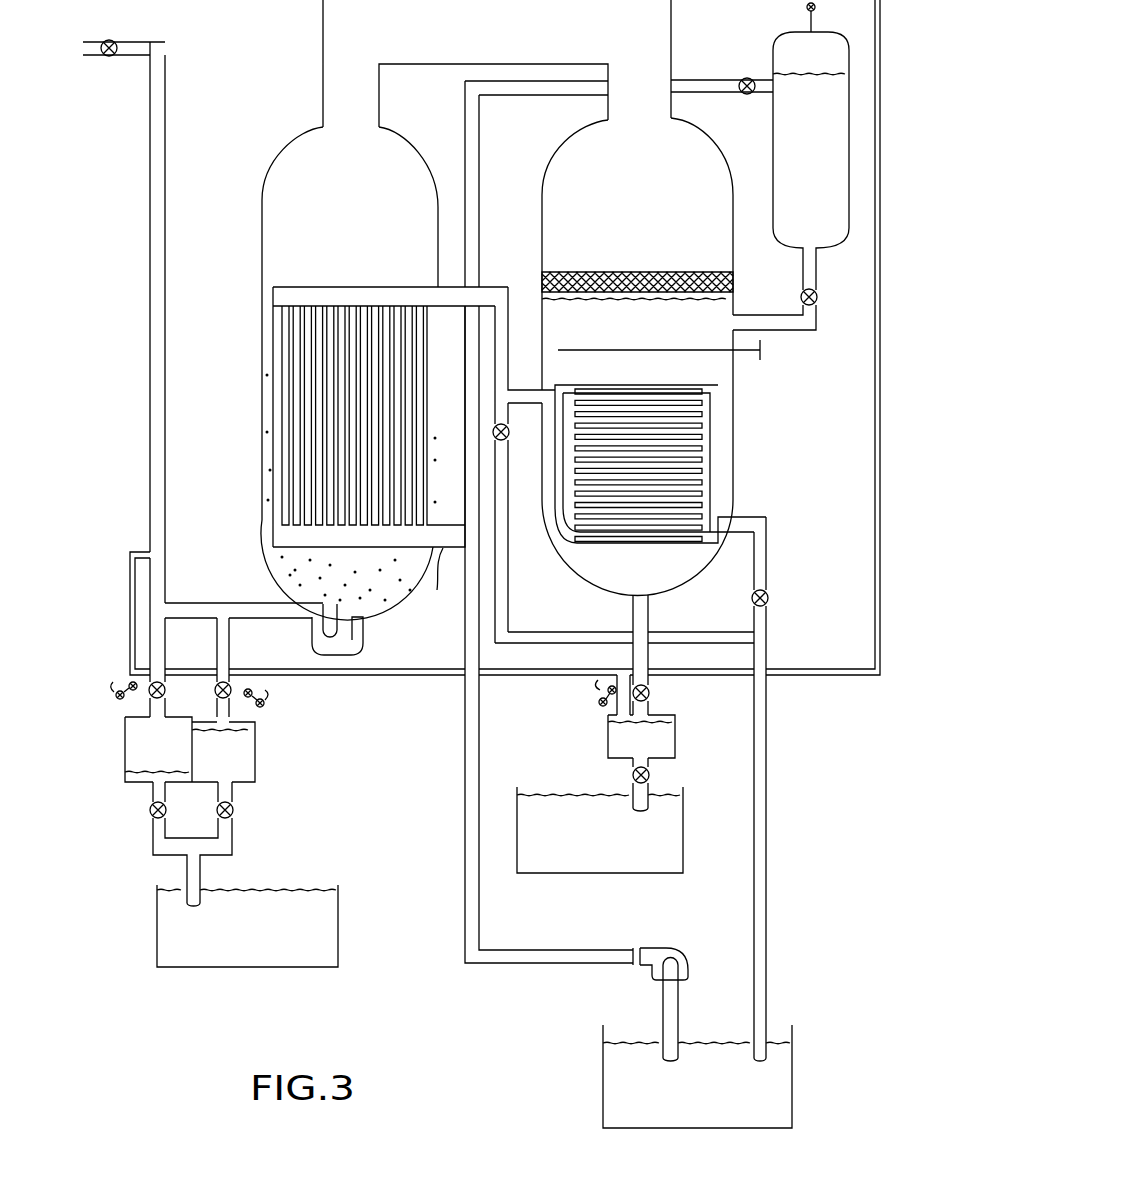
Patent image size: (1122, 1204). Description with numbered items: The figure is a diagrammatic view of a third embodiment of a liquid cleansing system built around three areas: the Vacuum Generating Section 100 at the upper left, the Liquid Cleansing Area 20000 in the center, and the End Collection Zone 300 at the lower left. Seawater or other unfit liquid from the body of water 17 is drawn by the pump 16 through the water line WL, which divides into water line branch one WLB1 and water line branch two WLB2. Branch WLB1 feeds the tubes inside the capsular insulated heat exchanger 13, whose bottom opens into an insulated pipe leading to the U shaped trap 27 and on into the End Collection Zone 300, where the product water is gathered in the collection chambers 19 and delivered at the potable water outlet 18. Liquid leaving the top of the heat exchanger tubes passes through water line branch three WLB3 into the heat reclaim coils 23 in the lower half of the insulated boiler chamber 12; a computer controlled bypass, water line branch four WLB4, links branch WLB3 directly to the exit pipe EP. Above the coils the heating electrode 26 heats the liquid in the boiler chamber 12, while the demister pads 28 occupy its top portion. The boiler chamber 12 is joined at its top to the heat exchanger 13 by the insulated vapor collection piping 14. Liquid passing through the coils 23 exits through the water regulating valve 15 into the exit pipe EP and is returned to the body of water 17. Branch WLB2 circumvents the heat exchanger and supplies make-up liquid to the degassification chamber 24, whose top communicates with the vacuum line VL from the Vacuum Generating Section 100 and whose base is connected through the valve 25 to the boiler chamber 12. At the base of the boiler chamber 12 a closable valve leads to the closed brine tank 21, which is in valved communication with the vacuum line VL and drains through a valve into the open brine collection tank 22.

The Liquid Cleansing Area 20000 is at (316, 75).
The Vacuum Generating Section 100 is at (120, 124).
The End Collection Zone 300 is at (120, 787).
The insulated boiler chamber 12 is at (733, 400).
The insulated heat exchanger 13 is at (262, 210).
The insulated vapor collection piping 14 is at (671, 22).
The water regulating valve 15 is at (767, 595).
The pump 16 is at (665, 946).
The body of water 17 is at (680, 1058).
The potable water outlet 18 is at (196, 905).
The collection chambers 19 is at (255, 783).
The brine tank 21 is at (608, 739).
The brine collection tank 22 is at (641, 812).
The heat reclaim coils 23 is at (702, 448).
The degassification chamber 24 is at (773, 118).
The valve 25 is at (816, 300).
The heating electrode 26 is at (762, 351).
The U shaped trap 27 is at (363, 648).
The demister pads 28 is at (735, 276).
The vacuum line VL is at (875, 16).
The water line WL is at (522, 523).
The water line branch one WLB1 is at (423, 584).
The water line branch two WLB2 is at (531, 96).
The water line branch three WLB3 is at (508, 340).
The water line branch four WLB4 is at (538, 629).
The exit pipe EP is at (768, 797).